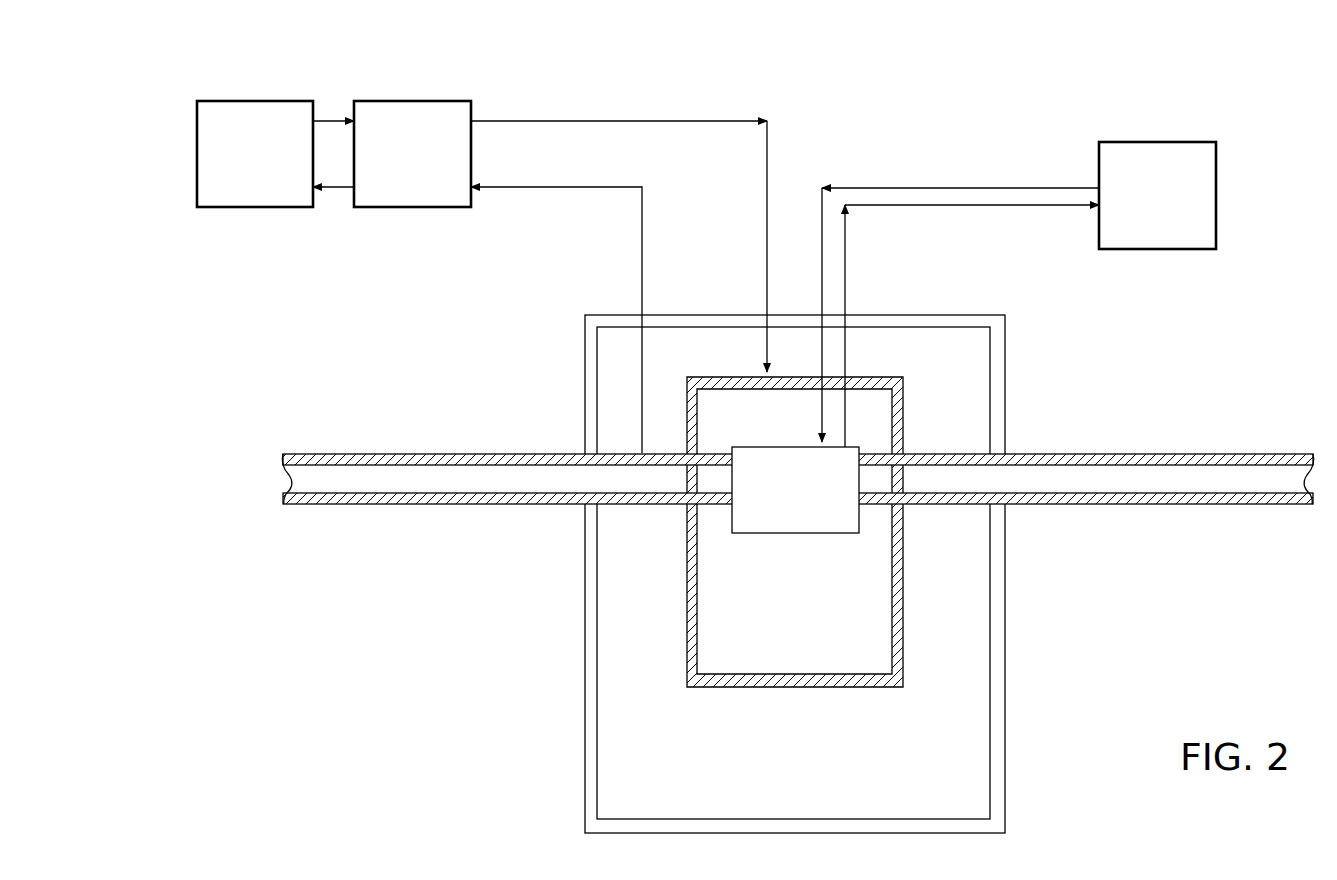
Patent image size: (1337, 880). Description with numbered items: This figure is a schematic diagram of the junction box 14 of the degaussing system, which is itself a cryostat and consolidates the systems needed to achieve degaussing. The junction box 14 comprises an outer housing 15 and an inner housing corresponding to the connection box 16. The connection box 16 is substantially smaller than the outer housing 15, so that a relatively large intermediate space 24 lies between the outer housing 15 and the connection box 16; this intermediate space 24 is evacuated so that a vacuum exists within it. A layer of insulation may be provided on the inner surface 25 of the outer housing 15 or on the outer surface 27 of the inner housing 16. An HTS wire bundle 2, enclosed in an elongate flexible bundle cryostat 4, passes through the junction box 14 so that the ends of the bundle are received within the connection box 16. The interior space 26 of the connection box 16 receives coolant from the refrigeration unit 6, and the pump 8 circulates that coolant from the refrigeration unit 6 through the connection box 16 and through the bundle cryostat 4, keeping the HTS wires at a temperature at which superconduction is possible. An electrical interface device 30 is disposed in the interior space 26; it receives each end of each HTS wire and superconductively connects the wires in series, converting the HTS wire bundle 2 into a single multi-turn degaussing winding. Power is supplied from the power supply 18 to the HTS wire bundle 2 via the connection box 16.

The HTS wire bundle 2 is at (798, 453).
The bundle cryostat 4 is at (1171, 454).
The refrigeration unit 6 is at (256, 107).
The pump 8 is at (415, 110).
The junction box 14 is at (798, 574).
The outer housing 15 is at (998, 682).
The connection box 16 is at (823, 532).
The power supply 18 is at (1164, 155).
The intermediate space 24 is at (818, 574).
The inner surface 25 is at (990, 764).
The interior space 26 is at (778, 645).
The outer surface 27 is at (905, 605).
The electrical interface device 30 is at (781, 516).